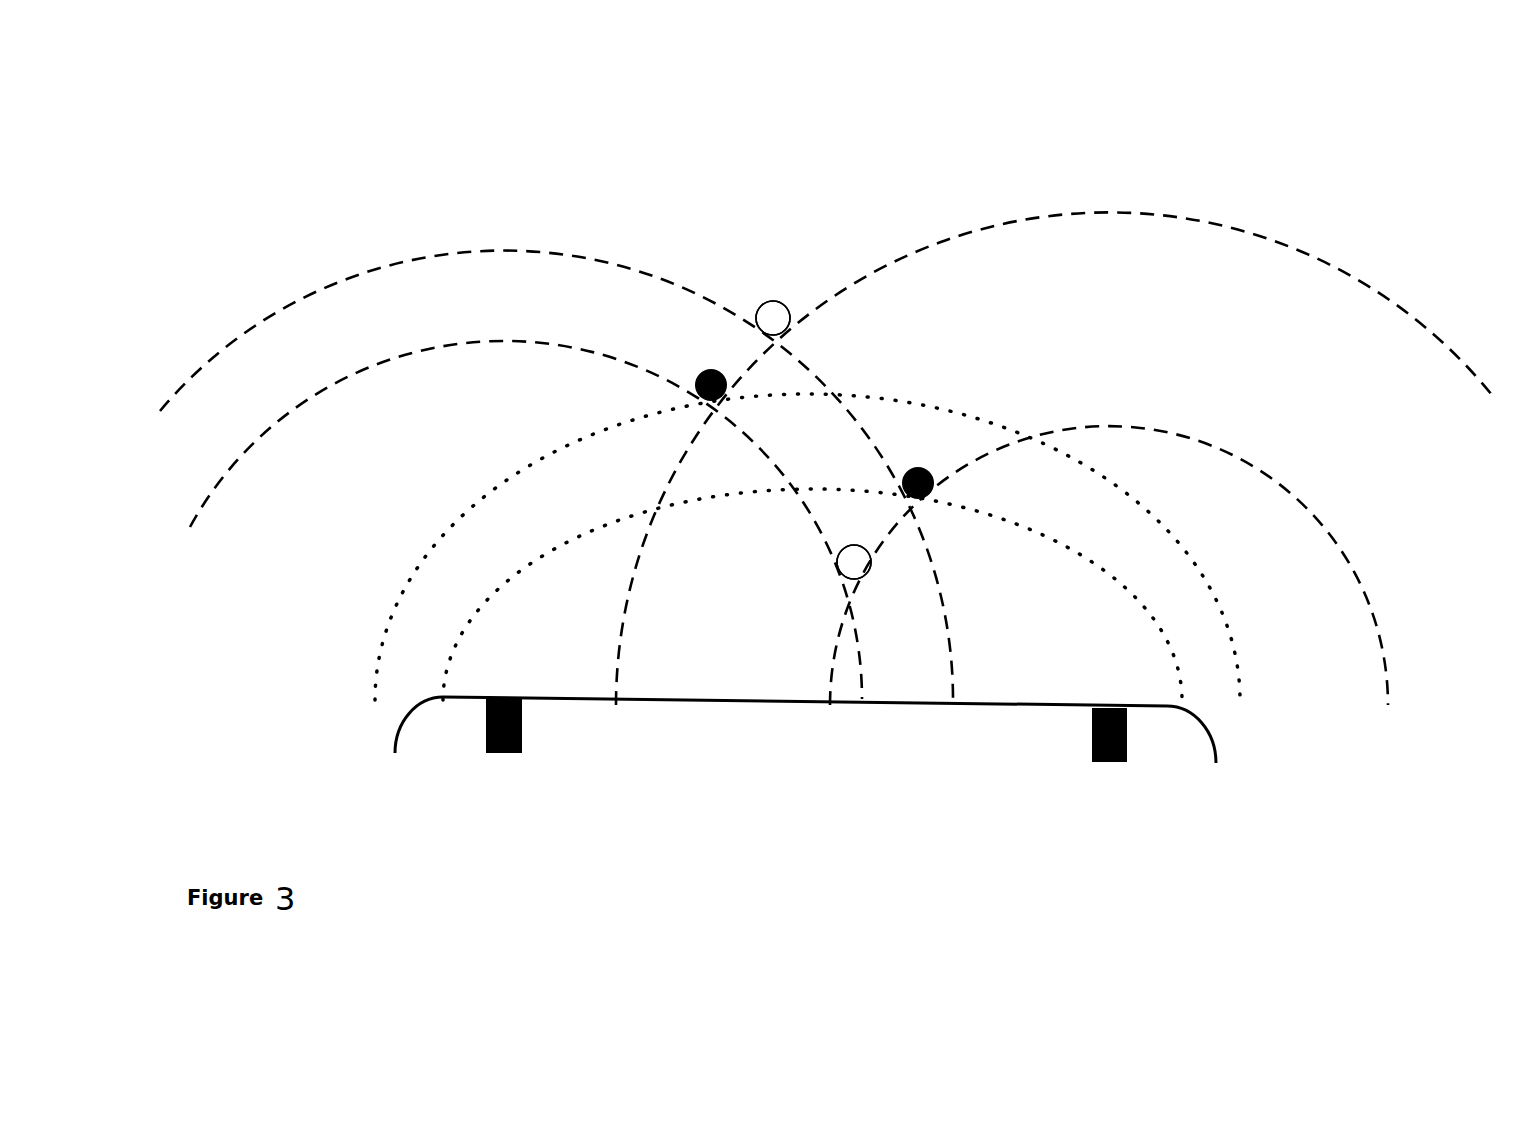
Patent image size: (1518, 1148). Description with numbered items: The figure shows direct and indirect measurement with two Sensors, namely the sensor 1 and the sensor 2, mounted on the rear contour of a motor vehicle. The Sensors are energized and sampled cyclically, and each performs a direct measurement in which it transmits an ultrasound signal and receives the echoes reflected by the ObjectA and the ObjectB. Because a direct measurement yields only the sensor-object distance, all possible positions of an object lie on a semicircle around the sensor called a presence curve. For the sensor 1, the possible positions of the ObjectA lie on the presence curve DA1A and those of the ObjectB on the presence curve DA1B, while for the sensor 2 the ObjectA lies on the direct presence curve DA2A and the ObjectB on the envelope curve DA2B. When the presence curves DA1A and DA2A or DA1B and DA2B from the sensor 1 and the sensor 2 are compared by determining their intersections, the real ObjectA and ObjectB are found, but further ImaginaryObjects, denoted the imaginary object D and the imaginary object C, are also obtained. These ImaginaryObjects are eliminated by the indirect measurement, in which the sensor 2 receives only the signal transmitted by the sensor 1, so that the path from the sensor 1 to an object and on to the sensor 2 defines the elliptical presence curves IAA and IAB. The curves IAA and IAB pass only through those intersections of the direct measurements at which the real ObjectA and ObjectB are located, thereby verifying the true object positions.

The sensor 1 is at (504, 725).
The sensor 2 is at (1109, 735).
The sensors Sensors is at (1080, 750).
The presence curve DA1A is at (378, 365).
The presence curve DA1B is at (403, 260).
The direct presence curve DA2A is at (1192, 222).
The envelope curve DA2B is at (1220, 453).
The presence curve IAA is at (1198, 573).
The presence curve IAB is at (472, 615).
The object ObjectA is at (700, 372).
The object ObjectB is at (925, 470).
The imaginary object C is at (773, 303).
The imaginary object D is at (858, 580).
The imaginary objects ImaginaryObjects is at (855, 560).